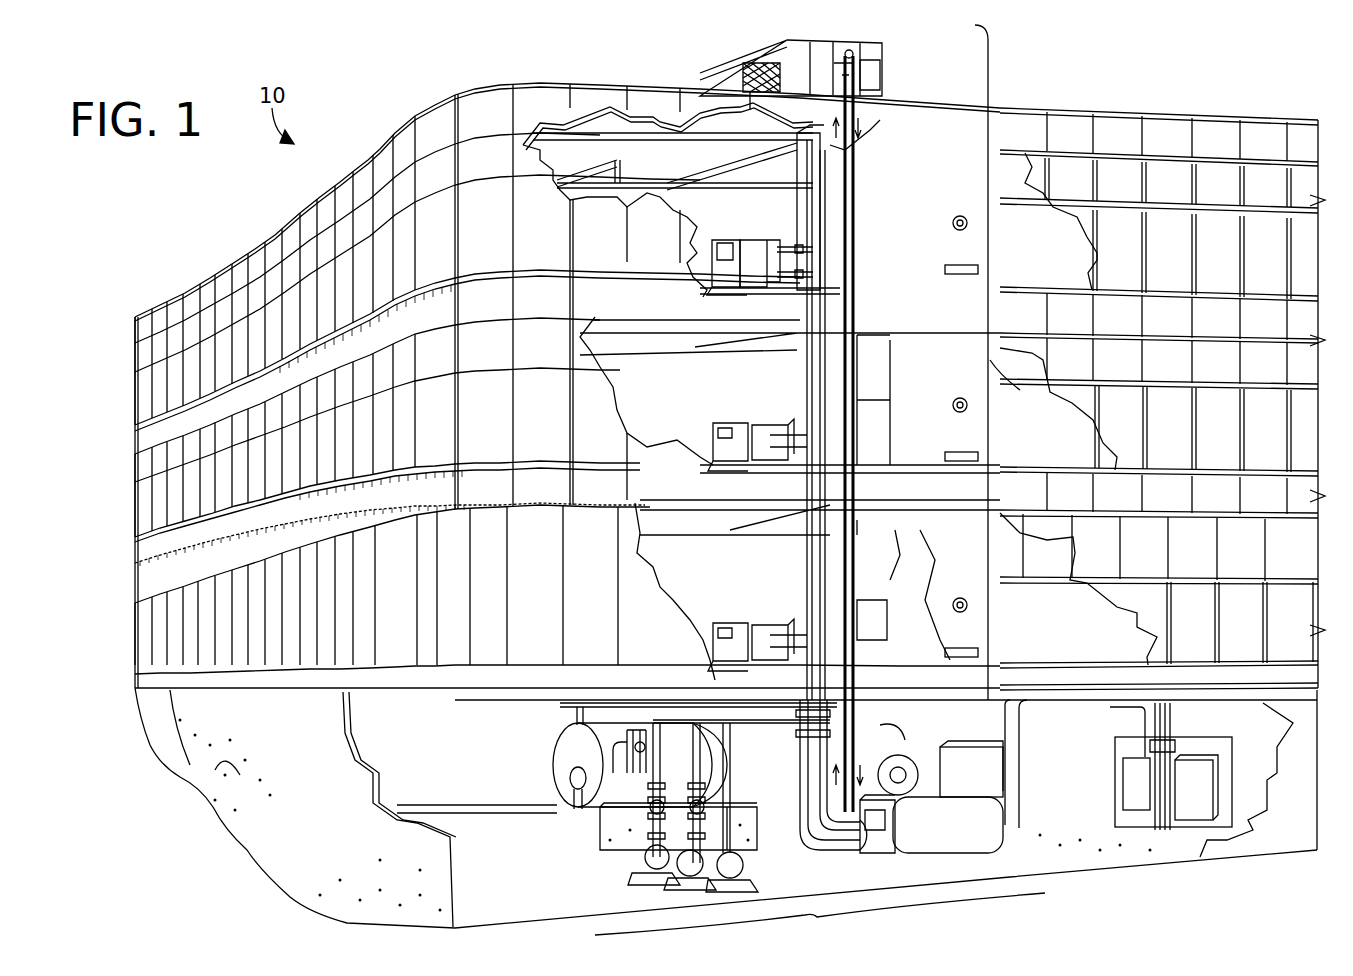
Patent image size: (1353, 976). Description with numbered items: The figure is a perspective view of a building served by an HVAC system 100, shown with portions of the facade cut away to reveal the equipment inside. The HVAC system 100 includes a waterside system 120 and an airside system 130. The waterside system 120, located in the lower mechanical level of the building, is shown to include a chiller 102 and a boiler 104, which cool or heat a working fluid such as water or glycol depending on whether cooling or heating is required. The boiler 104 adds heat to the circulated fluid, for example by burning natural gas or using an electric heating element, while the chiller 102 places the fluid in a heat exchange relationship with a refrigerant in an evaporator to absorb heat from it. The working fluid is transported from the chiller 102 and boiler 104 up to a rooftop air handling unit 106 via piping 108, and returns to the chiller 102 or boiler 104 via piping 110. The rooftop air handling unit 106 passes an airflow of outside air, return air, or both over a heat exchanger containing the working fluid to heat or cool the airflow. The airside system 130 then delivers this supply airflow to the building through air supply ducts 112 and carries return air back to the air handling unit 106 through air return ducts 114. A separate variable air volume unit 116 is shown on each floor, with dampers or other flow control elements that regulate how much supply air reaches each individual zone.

The HVAC system 100 is at (820, 922).
The chiller 102 is at (940, 830).
The boiler 104 is at (567, 757).
The rooftop air handling unit 106 is at (878, 88).
The piping 108 is at (790, 46).
The piping 110 is at (862, 62).
The air supply ducts 112 is at (807, 167).
The air return ducts 114 is at (712, 248).
The variable air volume units 116 is at (760, 240).
The waterside system 120 is at (1030, 792).
The airside system 130 is at (988, 372).